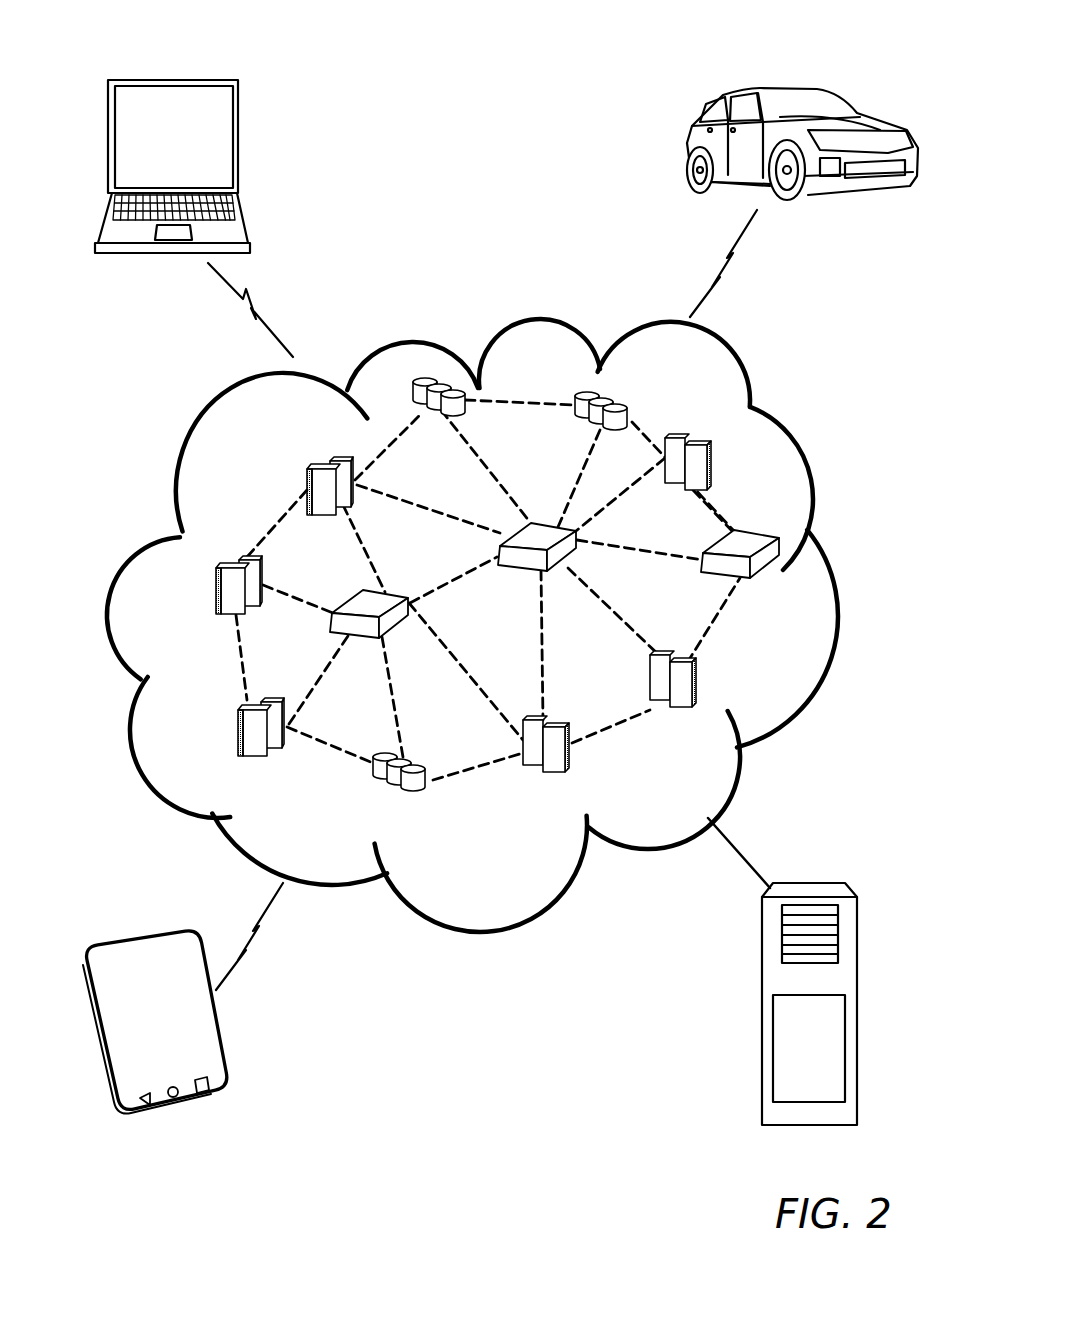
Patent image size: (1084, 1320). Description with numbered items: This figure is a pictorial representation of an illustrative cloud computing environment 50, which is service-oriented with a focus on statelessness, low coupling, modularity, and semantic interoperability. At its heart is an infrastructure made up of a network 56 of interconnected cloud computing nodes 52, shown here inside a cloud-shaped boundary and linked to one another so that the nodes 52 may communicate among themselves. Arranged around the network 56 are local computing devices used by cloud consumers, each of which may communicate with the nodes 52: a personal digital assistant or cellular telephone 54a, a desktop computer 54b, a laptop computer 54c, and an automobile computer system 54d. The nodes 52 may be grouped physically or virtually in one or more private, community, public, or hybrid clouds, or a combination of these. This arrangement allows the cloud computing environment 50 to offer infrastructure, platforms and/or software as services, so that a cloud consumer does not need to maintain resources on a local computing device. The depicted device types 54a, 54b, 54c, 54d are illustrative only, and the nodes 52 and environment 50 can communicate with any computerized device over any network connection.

The cloud computing environment 50 is at (401, 62).
The cloud computing nodes 52 is at (232, 614).
The personal digital assistant (PDA) or cellular telephone 54a is at (192, 1105).
The desktop computer 54b is at (760, 1098).
The laptop computer 54c is at (162, 80).
The automobile computer system 54d is at (773, 88).
The network 56 is at (220, 395).